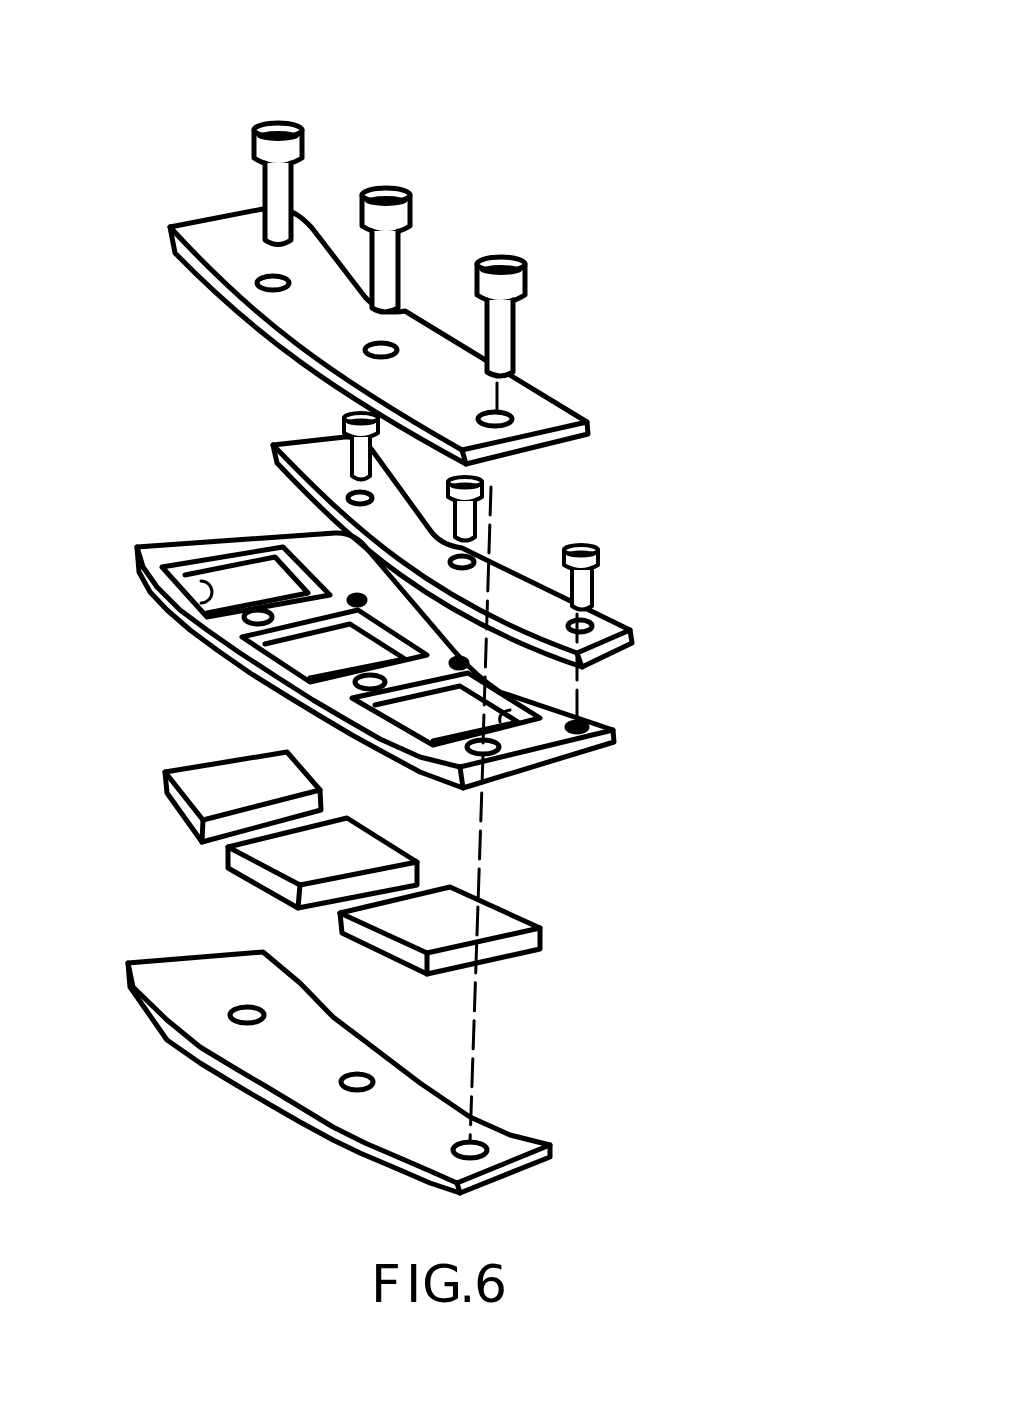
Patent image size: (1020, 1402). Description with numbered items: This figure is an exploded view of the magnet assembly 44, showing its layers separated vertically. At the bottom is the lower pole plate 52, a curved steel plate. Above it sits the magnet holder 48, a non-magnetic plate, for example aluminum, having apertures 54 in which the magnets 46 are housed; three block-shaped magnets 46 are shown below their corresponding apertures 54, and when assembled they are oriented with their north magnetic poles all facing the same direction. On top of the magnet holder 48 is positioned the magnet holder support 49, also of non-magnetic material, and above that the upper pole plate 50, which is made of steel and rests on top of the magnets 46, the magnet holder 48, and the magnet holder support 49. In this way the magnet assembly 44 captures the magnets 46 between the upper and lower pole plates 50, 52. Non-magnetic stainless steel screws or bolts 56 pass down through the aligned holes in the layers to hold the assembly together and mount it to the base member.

The magnet assembly 44 is at (790, 789).
The magnets 46 is at (283, 772).
The magnet holder 48 is at (223, 625).
The magnet holder support 49 is at (330, 480).
The upper pole plate 50 is at (327, 330).
The lower pole plate 52 is at (347, 1055).
The apertures 54 is at (201, 581).
The screws or bolts 56 is at (293, 120).